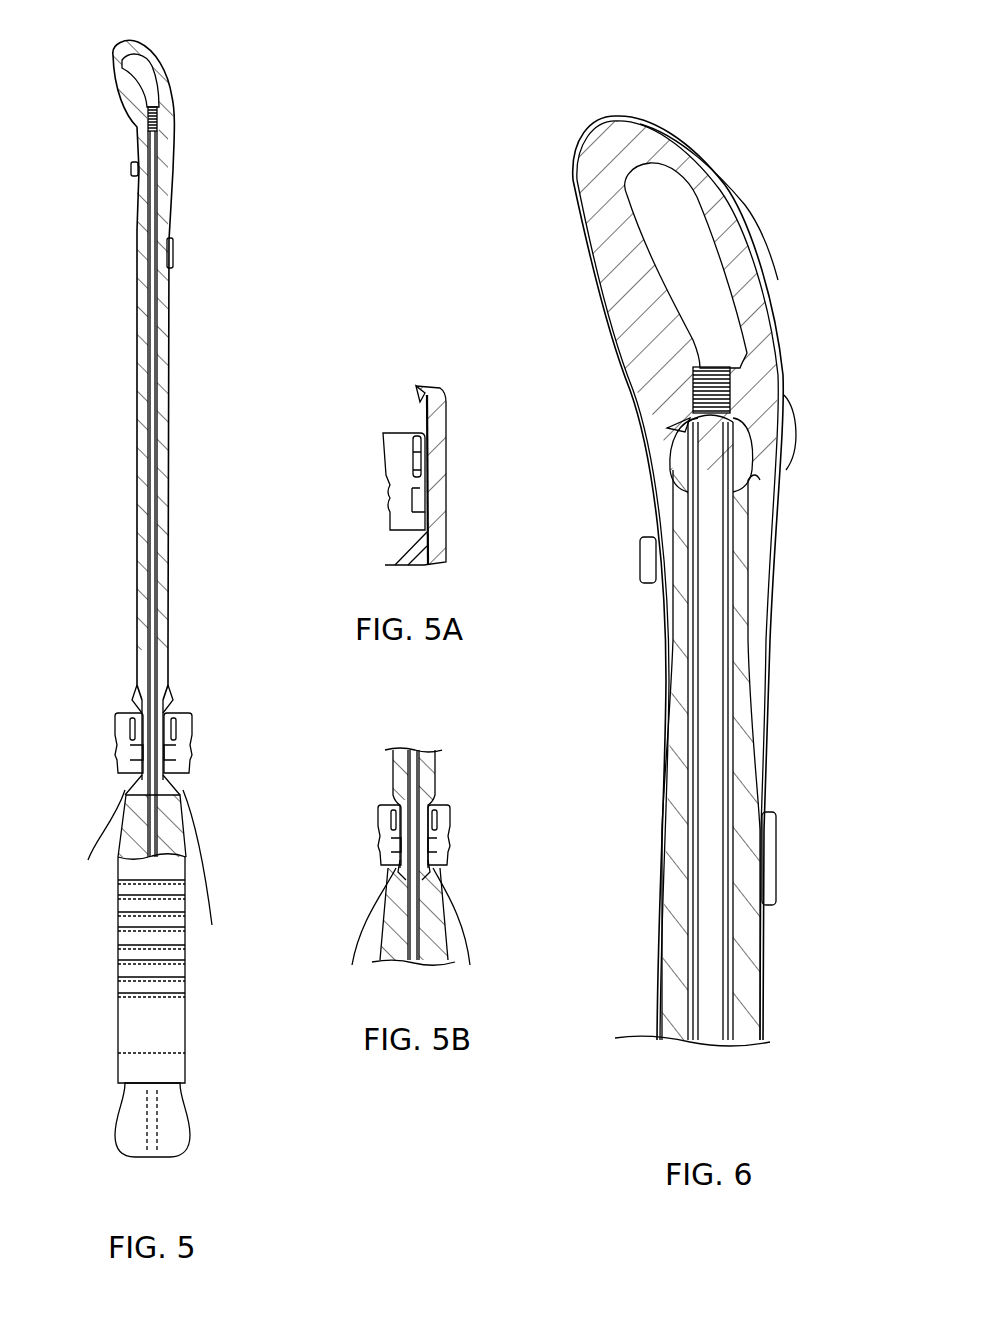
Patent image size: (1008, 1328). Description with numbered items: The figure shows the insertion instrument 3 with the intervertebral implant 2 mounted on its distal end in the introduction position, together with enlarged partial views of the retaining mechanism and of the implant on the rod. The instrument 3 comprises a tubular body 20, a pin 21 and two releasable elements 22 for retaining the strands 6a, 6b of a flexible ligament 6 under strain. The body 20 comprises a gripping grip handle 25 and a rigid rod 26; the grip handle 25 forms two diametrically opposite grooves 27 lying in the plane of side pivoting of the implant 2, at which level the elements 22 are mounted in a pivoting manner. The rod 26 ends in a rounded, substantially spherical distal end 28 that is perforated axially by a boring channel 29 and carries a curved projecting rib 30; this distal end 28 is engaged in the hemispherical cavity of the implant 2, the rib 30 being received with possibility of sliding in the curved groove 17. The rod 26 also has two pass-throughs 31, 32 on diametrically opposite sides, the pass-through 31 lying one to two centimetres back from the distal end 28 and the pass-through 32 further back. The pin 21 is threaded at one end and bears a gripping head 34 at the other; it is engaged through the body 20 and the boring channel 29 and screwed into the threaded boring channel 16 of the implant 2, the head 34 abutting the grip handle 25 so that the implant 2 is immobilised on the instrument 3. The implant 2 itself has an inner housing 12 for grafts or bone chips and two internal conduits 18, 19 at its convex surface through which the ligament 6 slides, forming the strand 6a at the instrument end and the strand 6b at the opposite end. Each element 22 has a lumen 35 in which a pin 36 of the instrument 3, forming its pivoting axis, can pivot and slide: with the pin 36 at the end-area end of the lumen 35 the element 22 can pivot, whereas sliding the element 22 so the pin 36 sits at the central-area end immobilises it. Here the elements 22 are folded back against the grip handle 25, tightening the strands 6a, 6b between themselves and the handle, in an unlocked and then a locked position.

In FIG. 5, the implant 2 is at (163, 50).
In FIG. 6, the implant 2 is at (538, 128).
In FIG. 5, the instrument 3 is at (68, 1000).
In FIG. 5, the ligament 6 is at (118, 92).
In FIG. 6, the ligament 6 is at (585, 250).
In FIG. 5, the strand 6a is at (172, 163).
In FIG. 5B, the strand 6a is at (466, 936).
In FIG. 6, the strand 6a is at (770, 640).
In FIG. 5, the strand 6b is at (128, 120).
In FIG. 5A, the strand 6b is at (392, 560).
In FIG. 5B, the strand 6b is at (360, 930).
In FIG. 6, the strand 6b is at (660, 650).
In FIG. 6, the inner housing 12 is at (715, 262).
In FIG. 6, the threaded boring channel 16 is at (735, 395).
In FIG. 6, the curved groove 17 is at (667, 427).
In FIG. 6, the internal conduit 18 is at (788, 400).
In FIG. 6, the internal conduit 19 is at (745, 203).
In FIG. 5, the body 20 is at (185, 985).
In FIG. 5, the pin 21 is at (150, 303).
In FIG. 5B, the pin 21 is at (409, 772).
In FIG. 6, the pin 21 is at (700, 708).
In FIG. 5, the releasable element 22 is at (115, 730).
In FIG. 5A, the releasable element 22 is at (395, 530).
In FIG. 5B, the releasable element 22 is at (380, 810).
In FIG. 5, the grip handle 25 is at (118, 902).
In FIG. 5, the rigid rod 26 is at (137, 430).
In FIG. 5, the groove 27 is at (135, 695).
In FIG. 5A, the groove 27 is at (418, 395).
In FIG. 5B, the groove 27 is at (395, 876).
In FIG. 6, the distal end 28 is at (668, 458).
In FIG. 6, the boring channel 29 is at (695, 475).
In FIG. 6, the projecting rib 30 is at (760, 480).
In FIG. 5, the pass-through 31 is at (133, 172).
In FIG. 6, the pass-through 31 is at (648, 590).
In FIG. 5, the pass-through 32 is at (169, 272).
In FIG. 6, the pass-through 32 is at (770, 906).
In FIG. 5, the gripping head 34 is at (180, 1120).
In FIG. 5A, the lumen 35 is at (413, 478).
In FIG. 5A, the pin 36 is at (415, 445).